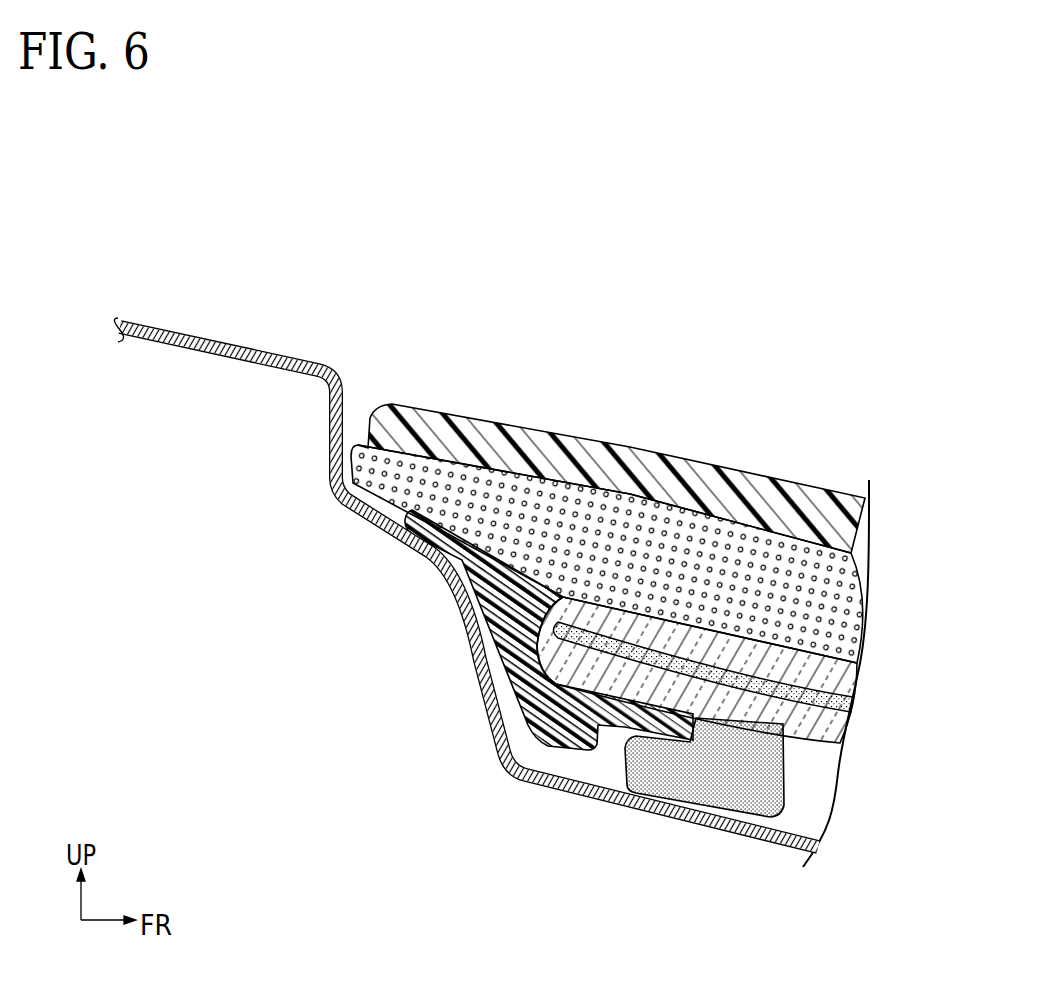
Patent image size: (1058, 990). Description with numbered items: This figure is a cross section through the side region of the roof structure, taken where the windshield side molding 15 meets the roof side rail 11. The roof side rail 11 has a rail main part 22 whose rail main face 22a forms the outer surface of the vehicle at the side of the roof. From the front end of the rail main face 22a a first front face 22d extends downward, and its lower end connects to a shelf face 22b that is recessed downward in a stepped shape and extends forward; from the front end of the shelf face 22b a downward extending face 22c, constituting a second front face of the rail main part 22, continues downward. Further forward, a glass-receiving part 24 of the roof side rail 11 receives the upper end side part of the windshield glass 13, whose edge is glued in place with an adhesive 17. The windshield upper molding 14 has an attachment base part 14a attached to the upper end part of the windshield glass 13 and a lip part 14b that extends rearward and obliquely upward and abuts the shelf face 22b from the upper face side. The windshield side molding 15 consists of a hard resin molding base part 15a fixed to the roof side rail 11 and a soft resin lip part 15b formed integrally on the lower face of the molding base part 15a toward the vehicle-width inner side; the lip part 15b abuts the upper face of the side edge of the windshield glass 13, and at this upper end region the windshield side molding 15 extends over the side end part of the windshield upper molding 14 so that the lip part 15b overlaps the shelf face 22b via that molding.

The roof side rail 11 is at (237, 345).
The windshield glass 13 is at (852, 672).
The windshield upper molding 14 is at (499, 701).
The attachment base part 14a is at (500, 612).
The lip part 14b is at (457, 560).
The windshield side molding 15 is at (618, 508).
The molding base part 15a is at (687, 467).
The lip part 15b is at (630, 550).
The adhesive 17 is at (742, 783).
The rail main part 22 is at (455, 567).
The rail main face 22a is at (280, 340).
The shelf face 22b is at (398, 516).
The downward extending face 22c is at (508, 712).
The first front face 22d is at (343, 408).
The glass-receiving part 24 is at (663, 812).